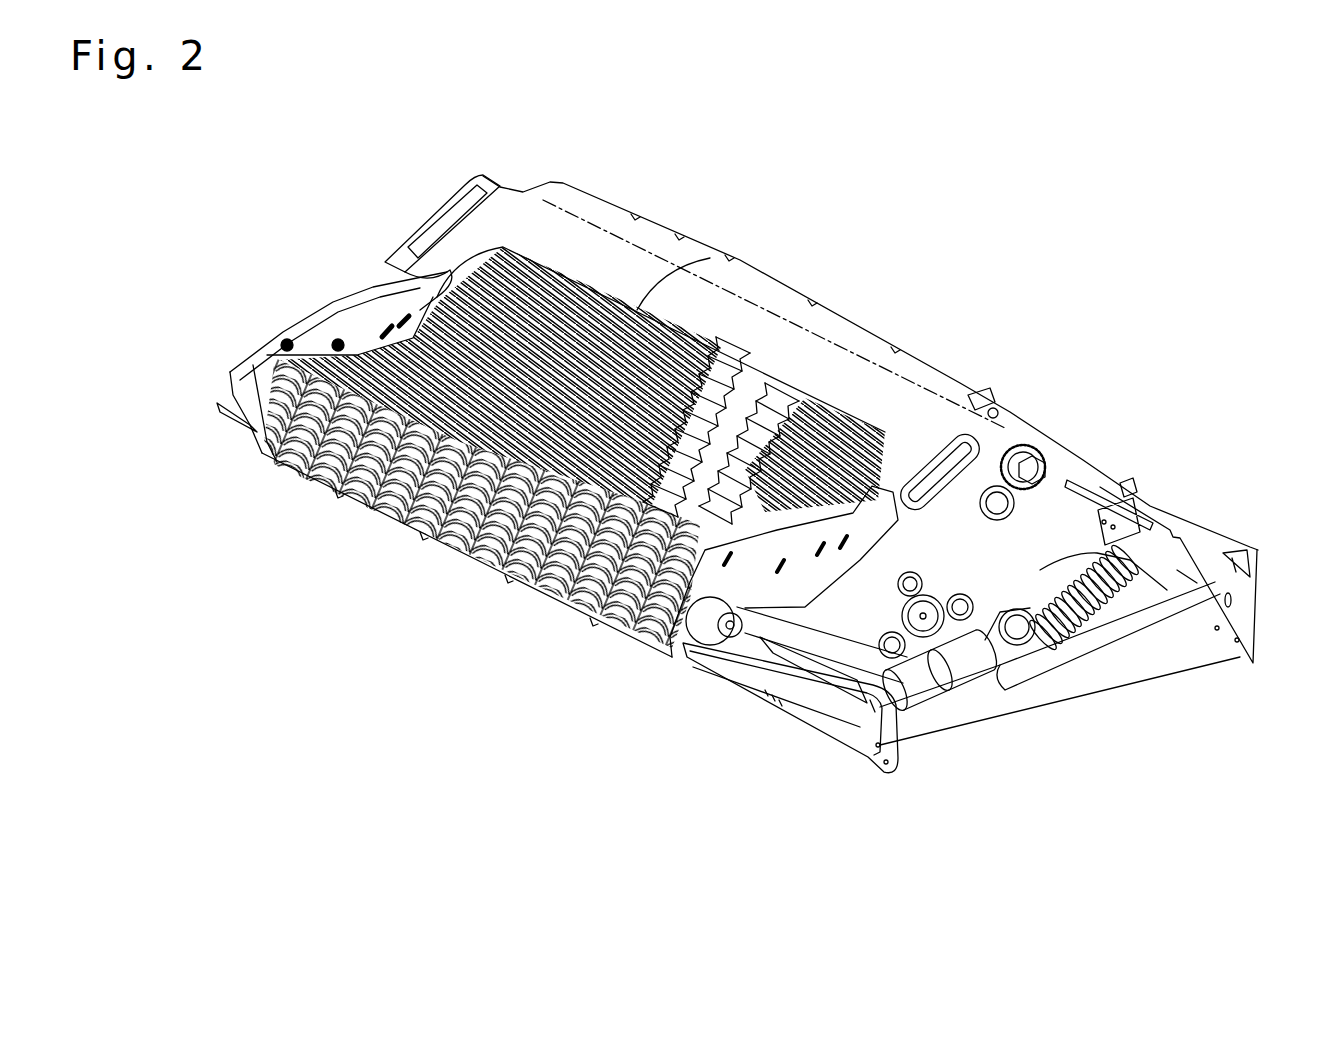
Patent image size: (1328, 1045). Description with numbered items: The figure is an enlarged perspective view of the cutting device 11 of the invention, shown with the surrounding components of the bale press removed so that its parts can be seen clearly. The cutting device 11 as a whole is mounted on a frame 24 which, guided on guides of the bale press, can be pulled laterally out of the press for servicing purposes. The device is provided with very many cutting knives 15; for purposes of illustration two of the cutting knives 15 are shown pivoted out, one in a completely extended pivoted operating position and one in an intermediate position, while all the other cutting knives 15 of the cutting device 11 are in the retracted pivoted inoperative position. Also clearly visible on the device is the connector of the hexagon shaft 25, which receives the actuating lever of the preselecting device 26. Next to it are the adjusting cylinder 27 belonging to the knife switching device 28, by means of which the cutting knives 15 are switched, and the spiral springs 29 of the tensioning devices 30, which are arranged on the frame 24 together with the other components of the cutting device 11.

The cutting device 11 is at (373, 655).
The cutting knives 15 is at (788, 403).
The frame 24 is at (722, 730).
The hexagon shaft 25 is at (1047, 467).
The preselecting device 26 is at (1002, 341).
The adjusting cylinder 27 is at (930, 672).
The knife switching device 28 is at (1043, 597).
The spiral springs 29 is at (1093, 627).
The tensioning devices 30 is at (1160, 662).